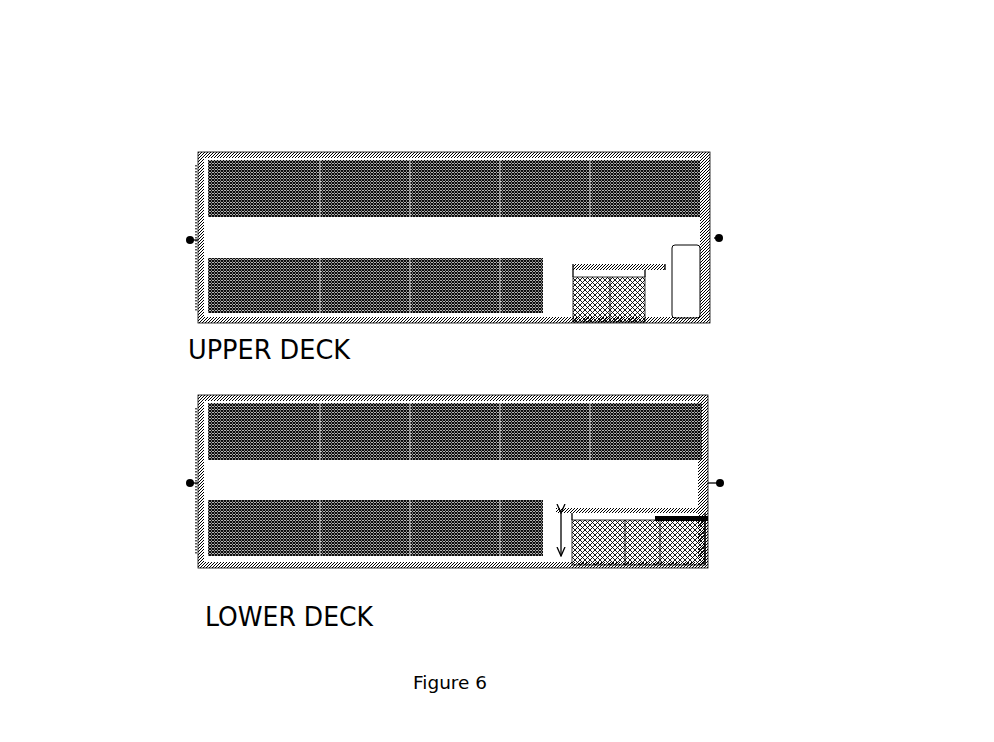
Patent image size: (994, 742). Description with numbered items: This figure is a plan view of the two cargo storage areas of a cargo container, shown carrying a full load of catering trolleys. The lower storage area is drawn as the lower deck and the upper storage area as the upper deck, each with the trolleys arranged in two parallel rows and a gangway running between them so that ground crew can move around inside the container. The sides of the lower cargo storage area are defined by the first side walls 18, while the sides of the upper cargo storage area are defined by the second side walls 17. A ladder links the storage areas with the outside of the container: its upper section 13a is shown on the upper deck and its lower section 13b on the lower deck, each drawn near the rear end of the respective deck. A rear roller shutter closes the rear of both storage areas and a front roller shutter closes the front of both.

The upper section of ladder 13a is at (657, 296).
The lower section of ladder 13b is at (682, 537).
The second side walls 17 is at (604, 144).
The first side walls 18 is at (650, 386).